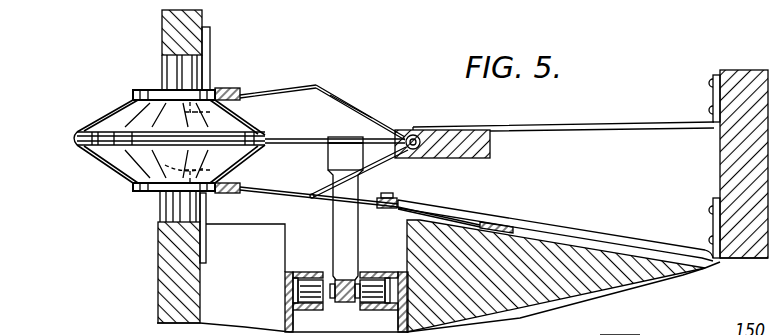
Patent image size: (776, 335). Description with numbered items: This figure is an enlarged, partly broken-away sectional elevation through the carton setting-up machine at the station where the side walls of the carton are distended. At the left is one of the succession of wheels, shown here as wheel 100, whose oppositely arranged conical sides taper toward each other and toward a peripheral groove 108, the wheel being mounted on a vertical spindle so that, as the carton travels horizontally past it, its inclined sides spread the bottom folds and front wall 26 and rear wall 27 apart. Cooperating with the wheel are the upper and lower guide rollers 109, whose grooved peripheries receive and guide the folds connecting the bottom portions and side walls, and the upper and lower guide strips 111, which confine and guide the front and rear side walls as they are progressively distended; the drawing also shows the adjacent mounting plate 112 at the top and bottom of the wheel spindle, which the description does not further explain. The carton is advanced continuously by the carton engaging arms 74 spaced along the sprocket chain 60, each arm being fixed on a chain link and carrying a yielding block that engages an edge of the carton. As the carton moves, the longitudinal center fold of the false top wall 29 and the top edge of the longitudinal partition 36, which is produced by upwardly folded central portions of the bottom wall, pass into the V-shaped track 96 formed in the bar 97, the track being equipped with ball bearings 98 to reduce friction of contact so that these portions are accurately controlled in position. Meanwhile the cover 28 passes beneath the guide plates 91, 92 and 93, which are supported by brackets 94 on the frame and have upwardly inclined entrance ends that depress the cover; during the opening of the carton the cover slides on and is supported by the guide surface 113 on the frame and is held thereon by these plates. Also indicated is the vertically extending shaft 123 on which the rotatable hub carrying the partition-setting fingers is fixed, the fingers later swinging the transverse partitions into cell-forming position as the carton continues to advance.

The front wall 26 is at (286, 89).
The rear wall 27 is at (290, 191).
The cover 28 is at (500, 232).
The false top wall 29 is at (377, 111).
The longitudinal partition 36 is at (317, 146).
The chain 60 is at (345, 302).
The carton engaging arms 74 is at (340, 220).
The guide plate 91 is at (600, 240).
The guide plate 92 is at (488, 226).
The guide plate 93 is at (386, 193).
The brackets 94 is at (472, 216).
The V-shaped track 96 is at (406, 130).
The bar 97 is at (468, 159).
The ball bearings 98 is at (413, 150).
The wheel 100 is at (118, 168).
The groove 108 is at (76, 137).
The guide rollers 109 is at (181, 142).
The guide strips 111 is at (238, 92).
The mounting plate 112 is at (210, 58).
The guide surface 113 is at (663, 272).
The shaft 123 is at (637, 334).